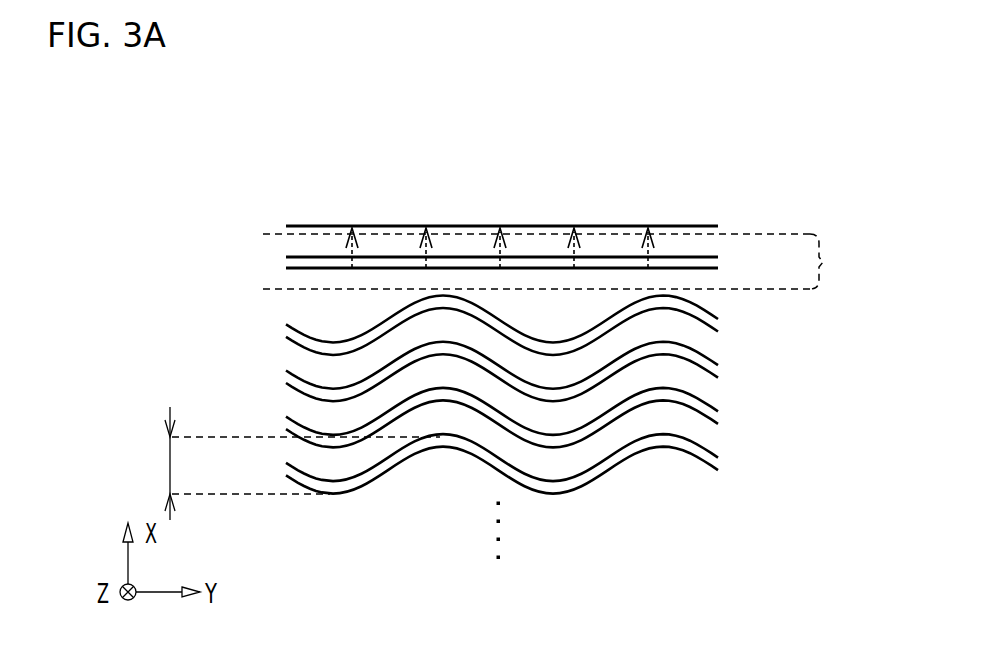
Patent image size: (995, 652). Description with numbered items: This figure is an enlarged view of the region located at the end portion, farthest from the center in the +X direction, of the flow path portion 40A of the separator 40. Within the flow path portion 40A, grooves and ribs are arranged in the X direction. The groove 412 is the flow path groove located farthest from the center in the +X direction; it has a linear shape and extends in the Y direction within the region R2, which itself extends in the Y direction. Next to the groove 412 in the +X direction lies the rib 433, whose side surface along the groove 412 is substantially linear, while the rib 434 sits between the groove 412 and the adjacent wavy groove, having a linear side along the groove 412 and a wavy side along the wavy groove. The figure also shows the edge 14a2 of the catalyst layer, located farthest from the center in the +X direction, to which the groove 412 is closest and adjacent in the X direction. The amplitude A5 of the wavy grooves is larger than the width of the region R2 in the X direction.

The separator 40 is at (738, 137).
The flow path portion 40A is at (771, 211).
The edge 14a2 is at (302, 226).
The rib 433 is at (290, 249).
The rib 434 is at (300, 308).
The groove 412 is at (718, 262).
The region R2 is at (831, 261).
The amplitude A5 is at (290, 463).